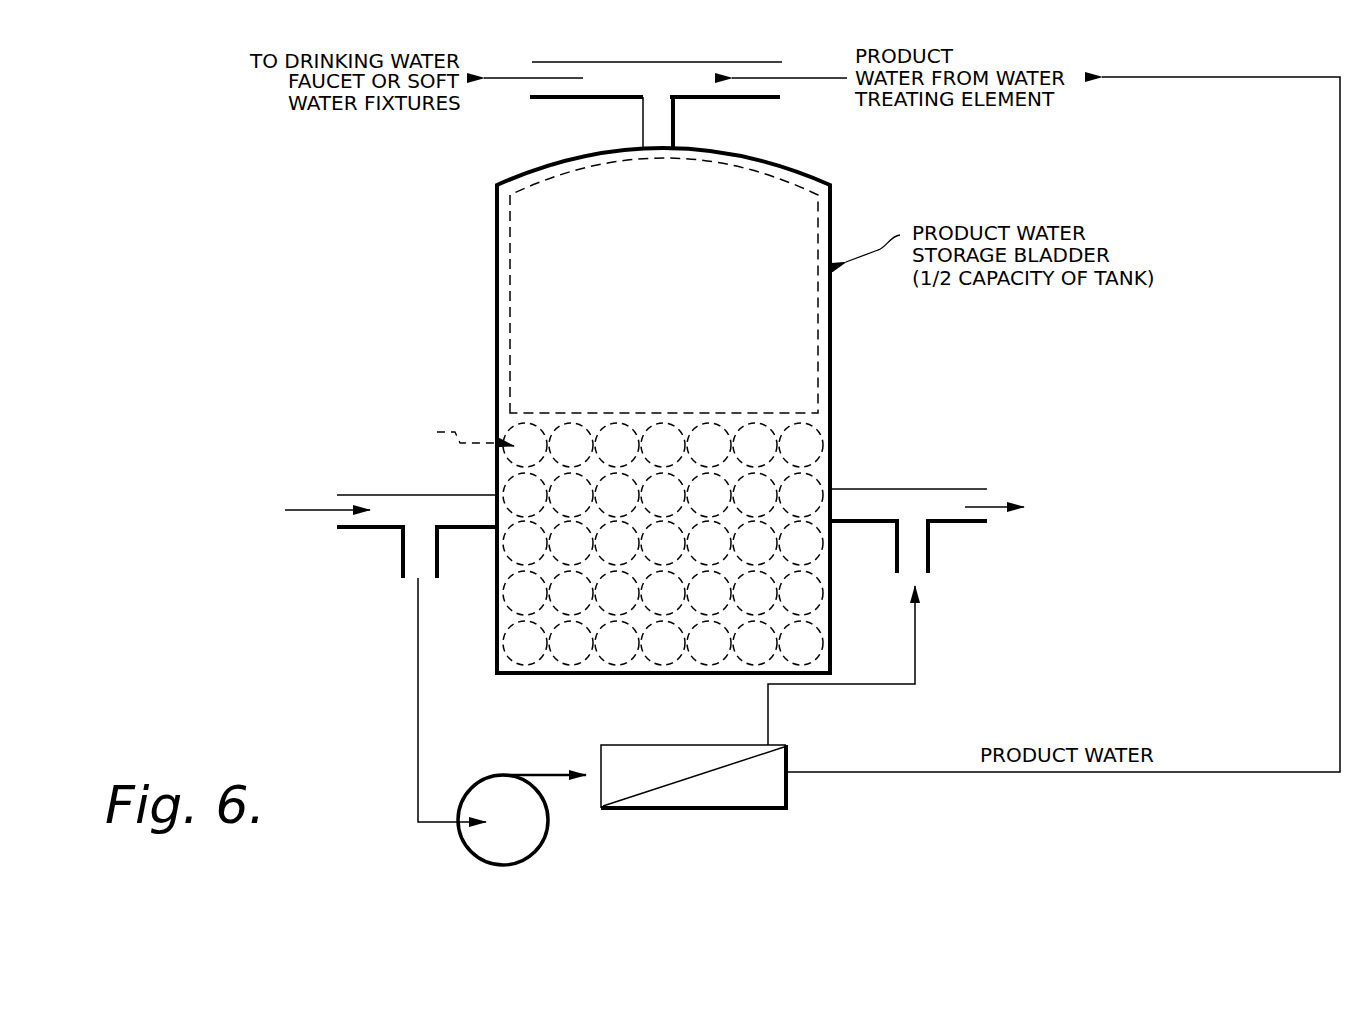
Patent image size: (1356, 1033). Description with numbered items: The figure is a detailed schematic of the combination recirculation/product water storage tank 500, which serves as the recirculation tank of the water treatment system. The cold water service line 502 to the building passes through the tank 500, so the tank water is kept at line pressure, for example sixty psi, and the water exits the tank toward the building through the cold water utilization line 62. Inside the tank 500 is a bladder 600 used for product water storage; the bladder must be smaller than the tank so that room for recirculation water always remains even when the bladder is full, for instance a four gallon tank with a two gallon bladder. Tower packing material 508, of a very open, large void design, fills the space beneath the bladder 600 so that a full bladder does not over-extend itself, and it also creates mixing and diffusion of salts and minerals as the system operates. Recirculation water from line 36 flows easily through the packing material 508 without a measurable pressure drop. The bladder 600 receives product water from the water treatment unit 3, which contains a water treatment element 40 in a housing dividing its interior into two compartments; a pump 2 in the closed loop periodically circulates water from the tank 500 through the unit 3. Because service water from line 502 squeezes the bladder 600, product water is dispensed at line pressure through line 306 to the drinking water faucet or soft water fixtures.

The pump 2 is at (490, 760).
The water treatment unit 3 is at (618, 732).
The recirculation water line 36 is at (916, 632).
The water treatment element 40 is at (706, 772).
The cold water utilization line 62 is at (996, 500).
The product water line 306 is at (578, 92).
The combination recirculation/product water storage tank 500 is at (497, 253).
The cold water service line 502 is at (381, 530).
The tower packing material 508 is at (805, 443).
The bladder 600 is at (803, 362).